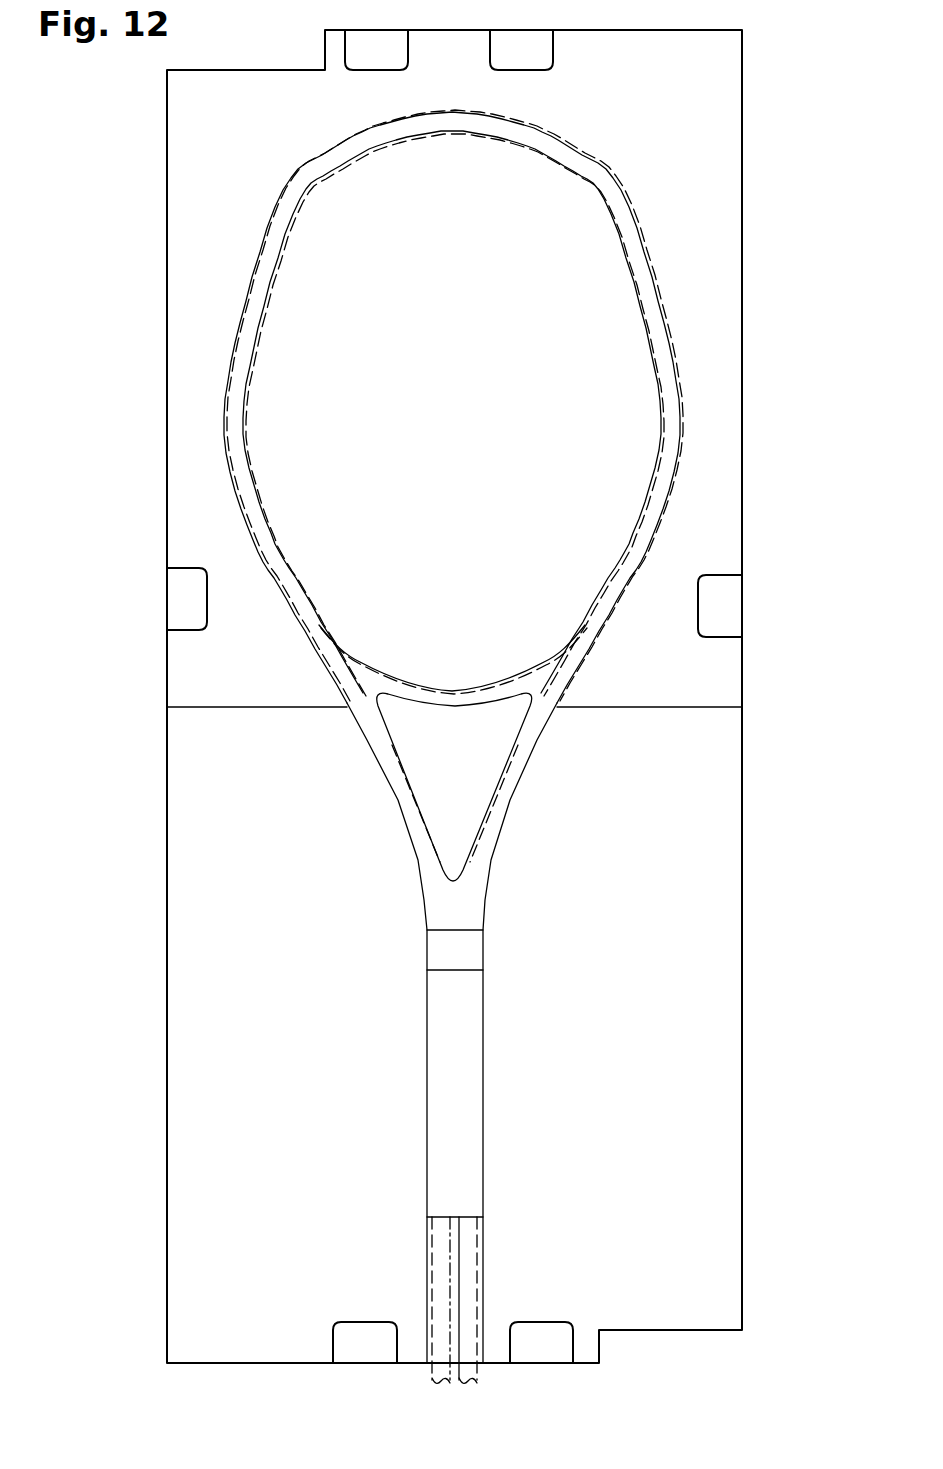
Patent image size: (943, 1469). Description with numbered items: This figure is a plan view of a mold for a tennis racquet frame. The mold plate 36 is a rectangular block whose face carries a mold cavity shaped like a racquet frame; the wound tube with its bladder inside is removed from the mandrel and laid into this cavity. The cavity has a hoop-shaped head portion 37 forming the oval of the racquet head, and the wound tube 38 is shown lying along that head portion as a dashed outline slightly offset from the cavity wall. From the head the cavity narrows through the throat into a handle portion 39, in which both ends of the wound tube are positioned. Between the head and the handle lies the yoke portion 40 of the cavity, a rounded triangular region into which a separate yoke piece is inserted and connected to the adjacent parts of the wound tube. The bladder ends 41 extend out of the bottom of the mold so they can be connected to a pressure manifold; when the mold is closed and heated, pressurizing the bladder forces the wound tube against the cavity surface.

The mold plate 36 is at (693, 915).
The head cavity 37 is at (607, 625).
The racket frame preform 38 is at (618, 224).
The handle cavity 39 is at (483, 1085).
The throat bridge cavity 40 is at (447, 690).
The inflation tubes 41 is at (472, 1276).